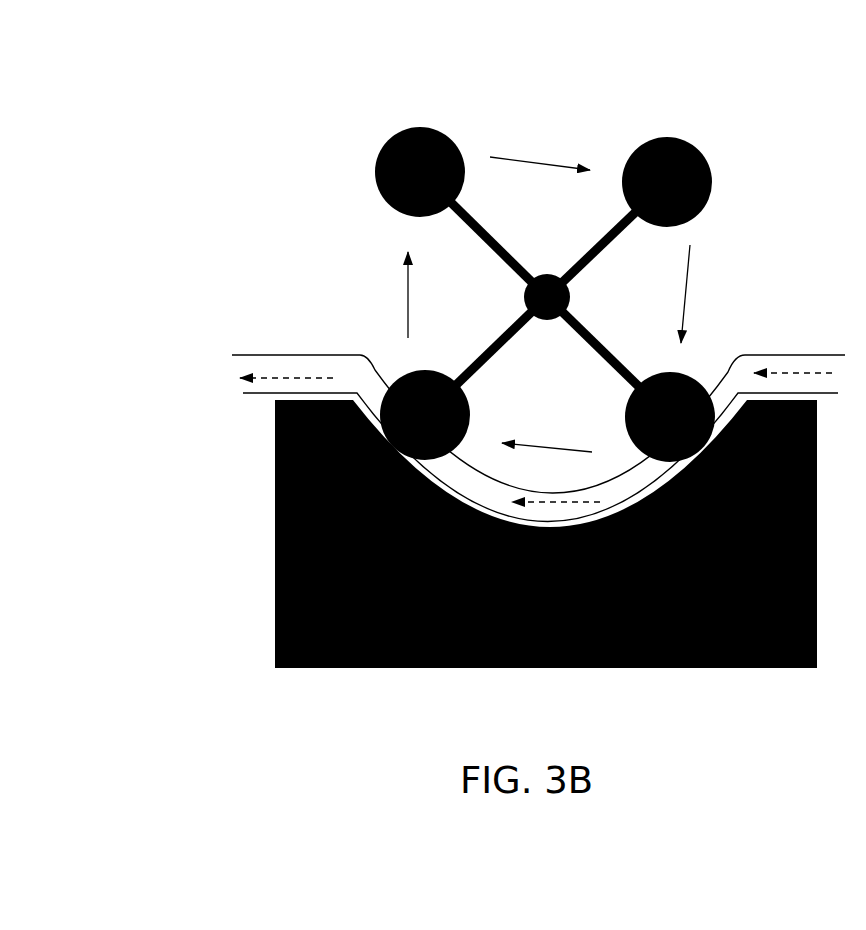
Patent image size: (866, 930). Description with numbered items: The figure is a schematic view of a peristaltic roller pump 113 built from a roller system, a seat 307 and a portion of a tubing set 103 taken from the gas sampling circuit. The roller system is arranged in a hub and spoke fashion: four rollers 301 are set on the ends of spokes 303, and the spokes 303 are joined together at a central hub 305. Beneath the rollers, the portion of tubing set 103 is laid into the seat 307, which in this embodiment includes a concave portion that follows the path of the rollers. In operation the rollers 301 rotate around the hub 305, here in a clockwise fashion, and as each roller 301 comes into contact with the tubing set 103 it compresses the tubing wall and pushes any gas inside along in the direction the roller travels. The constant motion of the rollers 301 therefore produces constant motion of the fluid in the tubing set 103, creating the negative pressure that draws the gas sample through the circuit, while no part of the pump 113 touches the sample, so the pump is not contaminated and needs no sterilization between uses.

The tubing set 103 is at (295, 355).
The pump 113 is at (823, 109).
The rollers 301 is at (635, 145).
The spokes 303 is at (613, 239).
The hub 305 is at (572, 297).
The seat 307 is at (275, 563).